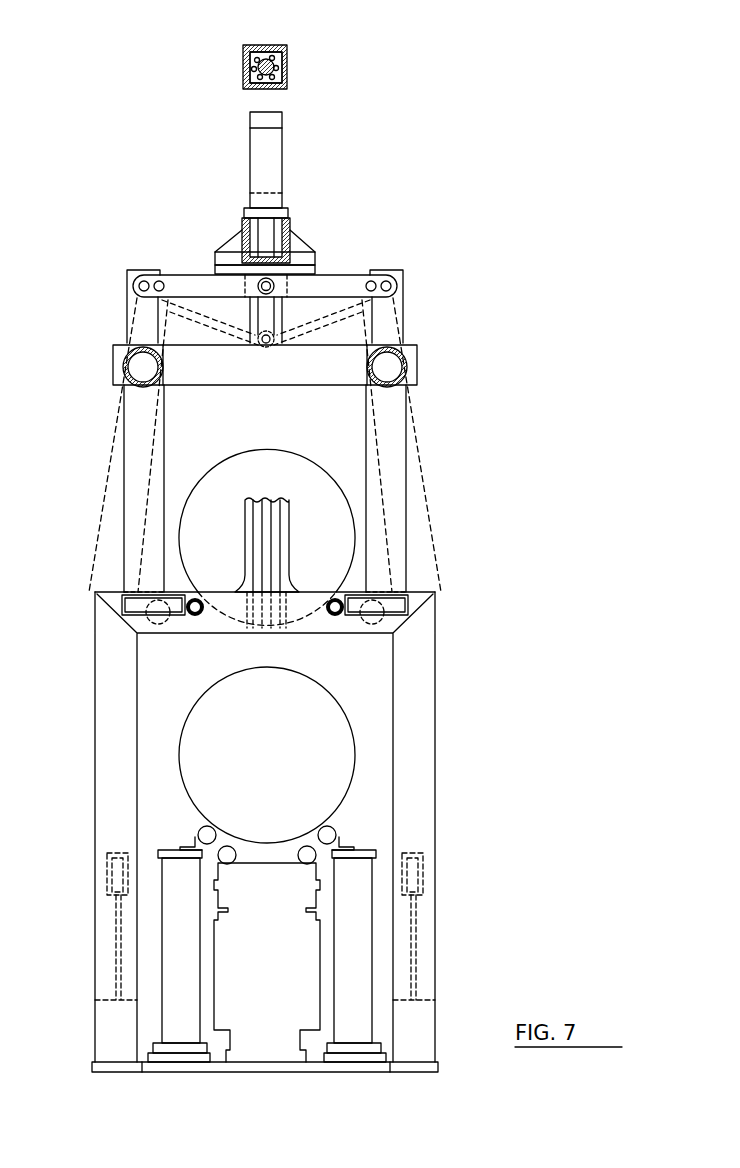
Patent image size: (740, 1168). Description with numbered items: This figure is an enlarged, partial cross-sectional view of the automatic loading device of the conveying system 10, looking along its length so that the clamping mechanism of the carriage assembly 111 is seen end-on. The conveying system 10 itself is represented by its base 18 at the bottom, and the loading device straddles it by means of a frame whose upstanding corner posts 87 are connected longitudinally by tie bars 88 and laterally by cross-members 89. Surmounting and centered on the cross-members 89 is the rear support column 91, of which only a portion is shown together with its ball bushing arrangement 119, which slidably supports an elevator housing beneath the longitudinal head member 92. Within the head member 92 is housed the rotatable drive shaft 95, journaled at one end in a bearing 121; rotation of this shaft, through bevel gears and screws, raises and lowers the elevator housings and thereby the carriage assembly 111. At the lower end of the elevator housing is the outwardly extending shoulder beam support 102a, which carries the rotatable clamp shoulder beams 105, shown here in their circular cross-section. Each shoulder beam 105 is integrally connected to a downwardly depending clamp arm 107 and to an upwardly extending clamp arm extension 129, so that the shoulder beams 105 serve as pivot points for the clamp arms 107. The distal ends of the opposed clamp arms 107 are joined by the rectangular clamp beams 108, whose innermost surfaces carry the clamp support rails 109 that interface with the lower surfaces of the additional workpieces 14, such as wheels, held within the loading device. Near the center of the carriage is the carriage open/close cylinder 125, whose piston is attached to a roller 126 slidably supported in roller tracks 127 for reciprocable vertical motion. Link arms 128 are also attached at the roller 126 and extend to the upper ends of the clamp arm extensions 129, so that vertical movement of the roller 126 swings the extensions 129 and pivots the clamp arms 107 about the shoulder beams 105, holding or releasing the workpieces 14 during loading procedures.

The conveying system 10 is at (243, 1018).
The additional workpieces 14 is at (303, 452).
The base 18 is at (112, 1068).
The corner posts 87 is at (107, 793).
The tie bars 88 is at (107, 880).
The cross-members 89 is at (308, 626).
The rear support column 91 is at (282, 533).
The longitudinal head member 92 is at (287, 58).
The drive shaft 95 is at (272, 53).
The shoulder beam support 102a is at (270, 375).
The clamp shoulder beams 105 is at (120, 365).
The clamp arms 107 is at (164, 452).
The clamp beams 108 is at (165, 618).
The clamp support rails 109 is at (195, 617).
The carriage assembly 111 is at (444, 388).
The ball bushing arrangement 119 is at (280, 565).
The bearing 121 is at (243, 85).
The carriage open/close cylinder 125 is at (277, 155).
The roller 126 is at (285, 277).
The roller tracks 127 is at (300, 293).
The link arms 128 is at (195, 278).
The clamp arm extensions 129 is at (133, 315).